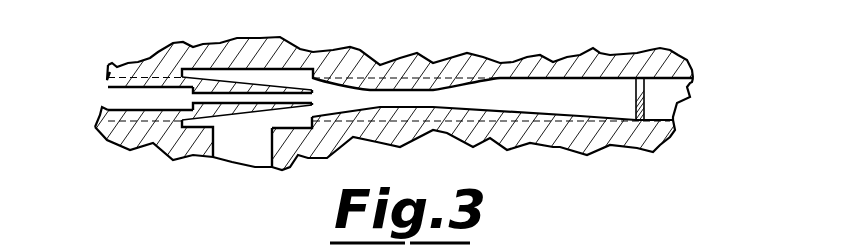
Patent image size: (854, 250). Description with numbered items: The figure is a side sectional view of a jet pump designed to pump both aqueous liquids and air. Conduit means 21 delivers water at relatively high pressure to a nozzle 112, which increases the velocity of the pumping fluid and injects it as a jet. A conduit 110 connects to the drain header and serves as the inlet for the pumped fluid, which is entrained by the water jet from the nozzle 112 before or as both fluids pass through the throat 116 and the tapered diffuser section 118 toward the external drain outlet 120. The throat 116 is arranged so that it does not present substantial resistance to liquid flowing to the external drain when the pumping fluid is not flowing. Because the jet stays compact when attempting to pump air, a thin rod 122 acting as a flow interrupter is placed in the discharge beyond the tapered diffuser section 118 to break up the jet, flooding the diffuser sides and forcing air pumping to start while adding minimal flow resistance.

The conduit means 21 is at (108, 97).
The conduit 110 is at (230, 152).
The nozzle 112 is at (235, 80).
The throat 116 is at (410, 107).
The tapered diffuser section 118 is at (533, 83).
The external drain outlet 120 is at (690, 85).
The thin rod 122 is at (658, 88).